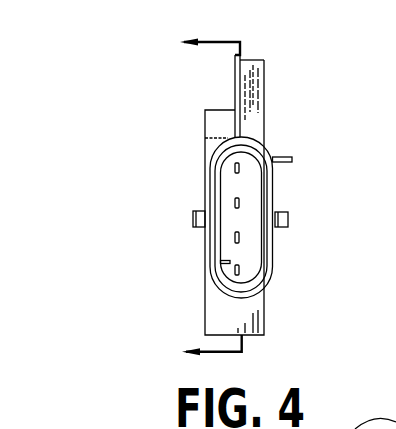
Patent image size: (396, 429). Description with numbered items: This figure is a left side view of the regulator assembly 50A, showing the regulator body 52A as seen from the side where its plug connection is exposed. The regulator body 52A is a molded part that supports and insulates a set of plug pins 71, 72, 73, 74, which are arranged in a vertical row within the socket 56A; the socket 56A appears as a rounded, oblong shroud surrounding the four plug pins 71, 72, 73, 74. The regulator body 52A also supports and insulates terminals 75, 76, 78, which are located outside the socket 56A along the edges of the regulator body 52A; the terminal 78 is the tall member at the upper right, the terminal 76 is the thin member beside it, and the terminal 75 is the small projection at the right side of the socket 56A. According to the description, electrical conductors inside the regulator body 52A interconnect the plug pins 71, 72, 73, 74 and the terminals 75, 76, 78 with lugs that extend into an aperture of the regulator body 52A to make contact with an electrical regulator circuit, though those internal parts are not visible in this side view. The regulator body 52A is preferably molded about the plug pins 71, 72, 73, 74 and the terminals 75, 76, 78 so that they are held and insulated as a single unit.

The connector assembly 50A is at (140, 114).
The regulator body 52A is at (258, 325).
The socket 56A is at (225, 280).
The plug pin 71 is at (239, 271).
The plug pin 72 is at (235, 237).
The plug pin 73 is at (239, 201).
The plug pin 74 is at (235, 167).
The terminal 75 is at (287, 157).
The terminal 76 is at (235, 84).
The terminal 78 is at (265, 100).